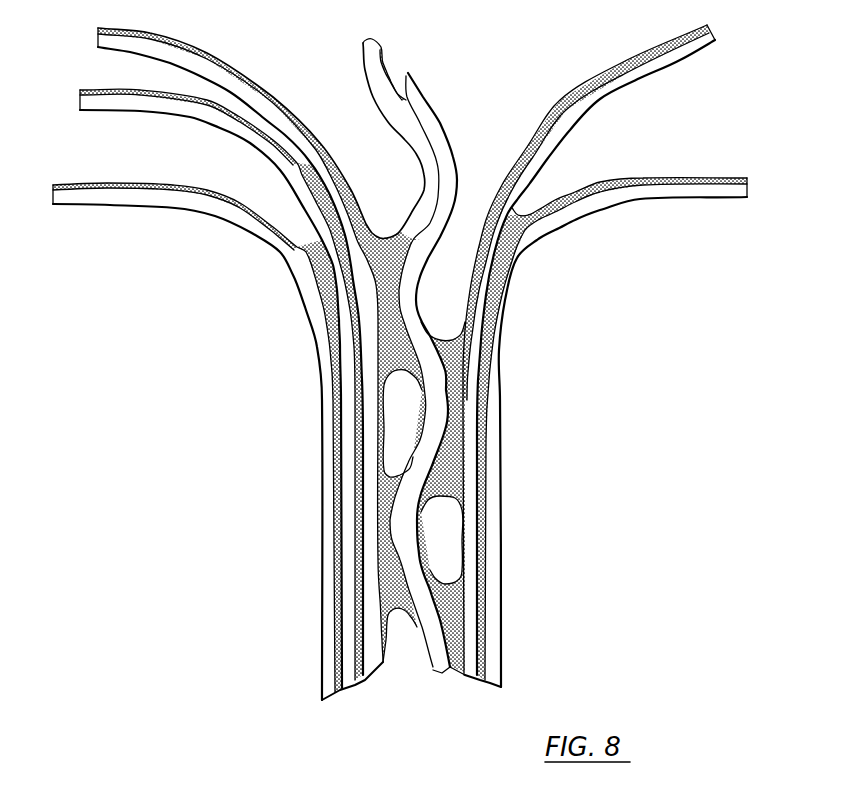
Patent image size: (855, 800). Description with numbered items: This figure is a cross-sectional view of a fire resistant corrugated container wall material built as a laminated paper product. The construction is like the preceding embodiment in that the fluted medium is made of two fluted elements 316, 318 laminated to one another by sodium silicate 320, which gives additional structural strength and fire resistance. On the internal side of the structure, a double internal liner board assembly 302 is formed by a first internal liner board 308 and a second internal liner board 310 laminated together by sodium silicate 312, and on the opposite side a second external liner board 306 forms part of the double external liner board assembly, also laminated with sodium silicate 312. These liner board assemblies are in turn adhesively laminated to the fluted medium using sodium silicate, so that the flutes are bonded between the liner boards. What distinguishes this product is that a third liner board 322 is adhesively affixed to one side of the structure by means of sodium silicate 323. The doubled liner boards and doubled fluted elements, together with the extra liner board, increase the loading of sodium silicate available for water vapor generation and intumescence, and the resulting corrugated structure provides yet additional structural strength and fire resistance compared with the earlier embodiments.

The double internal liner board assembly 302 is at (322, 487).
The second external liner board 306 is at (372, 568).
The first internal liner board 308 is at (498, 452).
The second internal liner board 310 is at (480, 527).
The sodium silicate 312 is at (453, 353).
The fluted element 316 is at (441, 146).
The fluted element 318 is at (418, 147).
The sodium silicate 320 is at (387, 63).
The third liner board 322 is at (283, 253).
The sodium silicate 323 is at (343, 294).